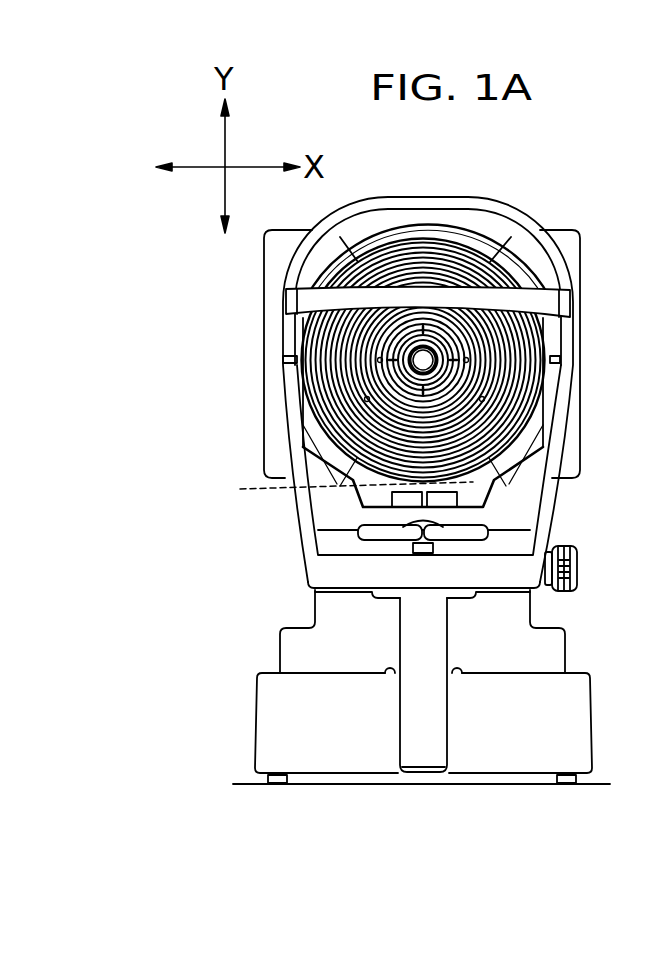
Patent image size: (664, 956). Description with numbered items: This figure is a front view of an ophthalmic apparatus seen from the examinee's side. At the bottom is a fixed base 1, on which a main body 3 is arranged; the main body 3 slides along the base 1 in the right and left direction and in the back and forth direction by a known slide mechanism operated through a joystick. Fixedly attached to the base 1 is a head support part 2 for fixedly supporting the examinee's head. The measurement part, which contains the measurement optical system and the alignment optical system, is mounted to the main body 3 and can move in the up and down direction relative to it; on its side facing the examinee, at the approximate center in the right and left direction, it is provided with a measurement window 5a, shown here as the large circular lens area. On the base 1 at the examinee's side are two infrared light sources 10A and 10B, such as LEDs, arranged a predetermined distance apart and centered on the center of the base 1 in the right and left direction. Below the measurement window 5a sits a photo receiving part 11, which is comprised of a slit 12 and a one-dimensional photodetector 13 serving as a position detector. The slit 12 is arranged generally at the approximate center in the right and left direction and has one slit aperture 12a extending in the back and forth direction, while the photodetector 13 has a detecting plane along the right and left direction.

The base 1 is at (285, 750).
The head support part 2 is at (470, 573).
The main body 3 is at (552, 648).
The measurement window 5a is at (420, 360).
The light source 10A is at (390, 674).
The light source 10B is at (457, 674).
The photo receiving part 11 is at (188, 476).
The slit 12 is at (392, 498).
The slit aperture 12a is at (422, 505).
The photodetector 13 is at (337, 492).